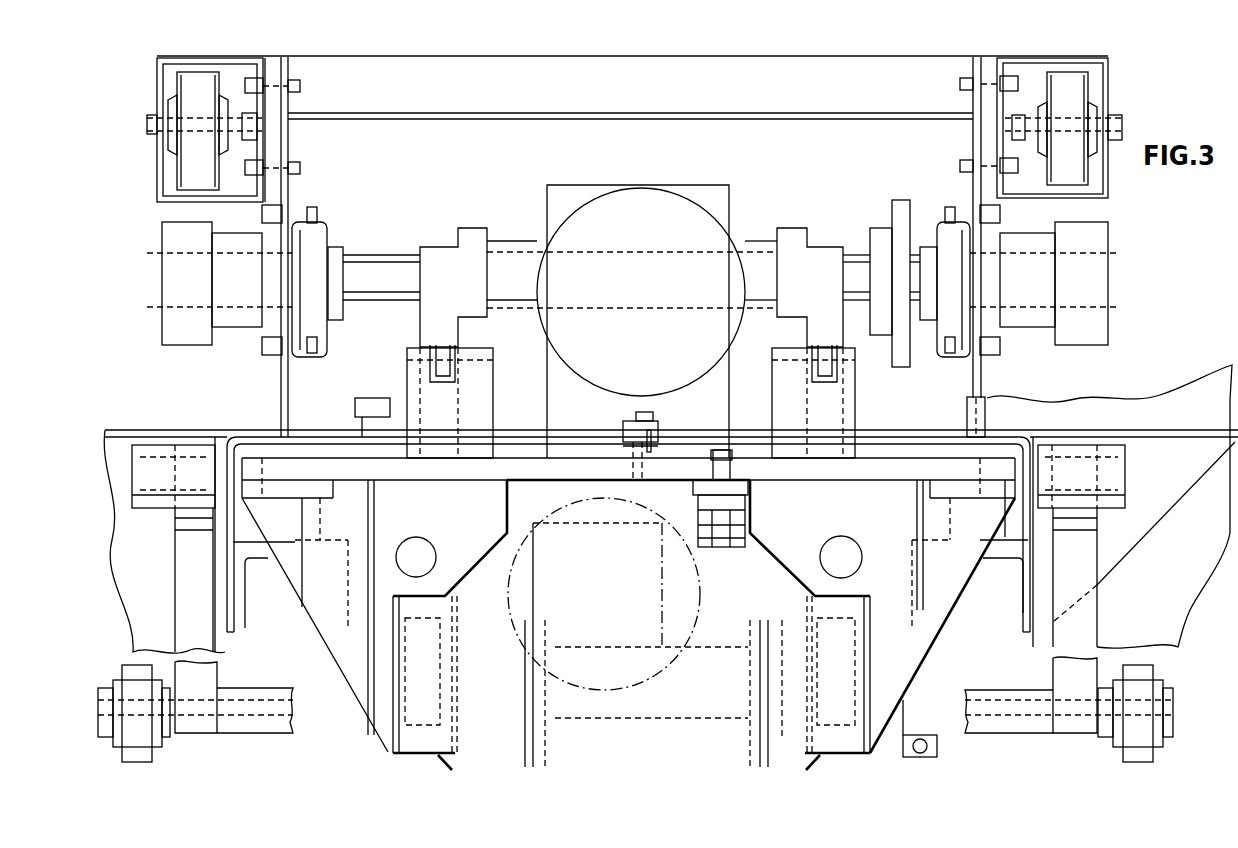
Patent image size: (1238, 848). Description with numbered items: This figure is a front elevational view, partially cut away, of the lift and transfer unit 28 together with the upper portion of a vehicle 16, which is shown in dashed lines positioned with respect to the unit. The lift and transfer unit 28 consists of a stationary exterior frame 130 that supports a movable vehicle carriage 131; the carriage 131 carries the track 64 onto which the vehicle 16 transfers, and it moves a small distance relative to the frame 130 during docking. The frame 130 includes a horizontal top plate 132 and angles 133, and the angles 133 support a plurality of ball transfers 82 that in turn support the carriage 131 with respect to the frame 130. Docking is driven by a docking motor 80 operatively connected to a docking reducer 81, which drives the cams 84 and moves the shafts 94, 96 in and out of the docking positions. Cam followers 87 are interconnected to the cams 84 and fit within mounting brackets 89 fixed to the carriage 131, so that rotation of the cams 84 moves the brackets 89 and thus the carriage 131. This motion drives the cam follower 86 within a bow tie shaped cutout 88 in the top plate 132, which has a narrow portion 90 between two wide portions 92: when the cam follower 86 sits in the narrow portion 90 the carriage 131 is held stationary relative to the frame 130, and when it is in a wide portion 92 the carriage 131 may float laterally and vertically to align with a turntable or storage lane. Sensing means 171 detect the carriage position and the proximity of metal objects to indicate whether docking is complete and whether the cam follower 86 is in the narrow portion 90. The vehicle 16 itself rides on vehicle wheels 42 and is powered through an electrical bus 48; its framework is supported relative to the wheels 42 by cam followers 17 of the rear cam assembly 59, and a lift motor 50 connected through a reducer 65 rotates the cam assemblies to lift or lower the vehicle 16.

The vehicle 16 is at (678, 735).
The cam followers 17 is at (538, 750).
The lift and transfer unit 28 is at (1143, 279).
The vehicle wheels 42 is at (427, 672).
The electrical bus 48 is at (696, 520).
The lift motor 50 is at (570, 514).
The rear cam assembly 59 is at (648, 705).
The lift and transfer unit track 64 is at (390, 750).
The reducer 65 is at (538, 581).
The docking motor 80 is at (619, 208).
The docking reducer 81 is at (708, 198).
The ball transfers 82 is at (283, 523).
The cams 84 is at (437, 258).
The cam follower 86 is at (657, 427).
The cam followers 87 is at (437, 350).
The cutouts 88 is at (598, 413).
The mounting brackets 89 is at (488, 406).
The narrow portion 90 is at (622, 433).
The wide portions 92 is at (660, 436).
The shaft 94 is at (412, 550).
The shaft 96 is at (852, 552).
The frame 130 is at (396, 66).
The vehicle carriage 131 is at (902, 660).
The top plate 132 is at (318, 432).
The angles 133 is at (247, 622).
The sensing means 171 is at (366, 407).